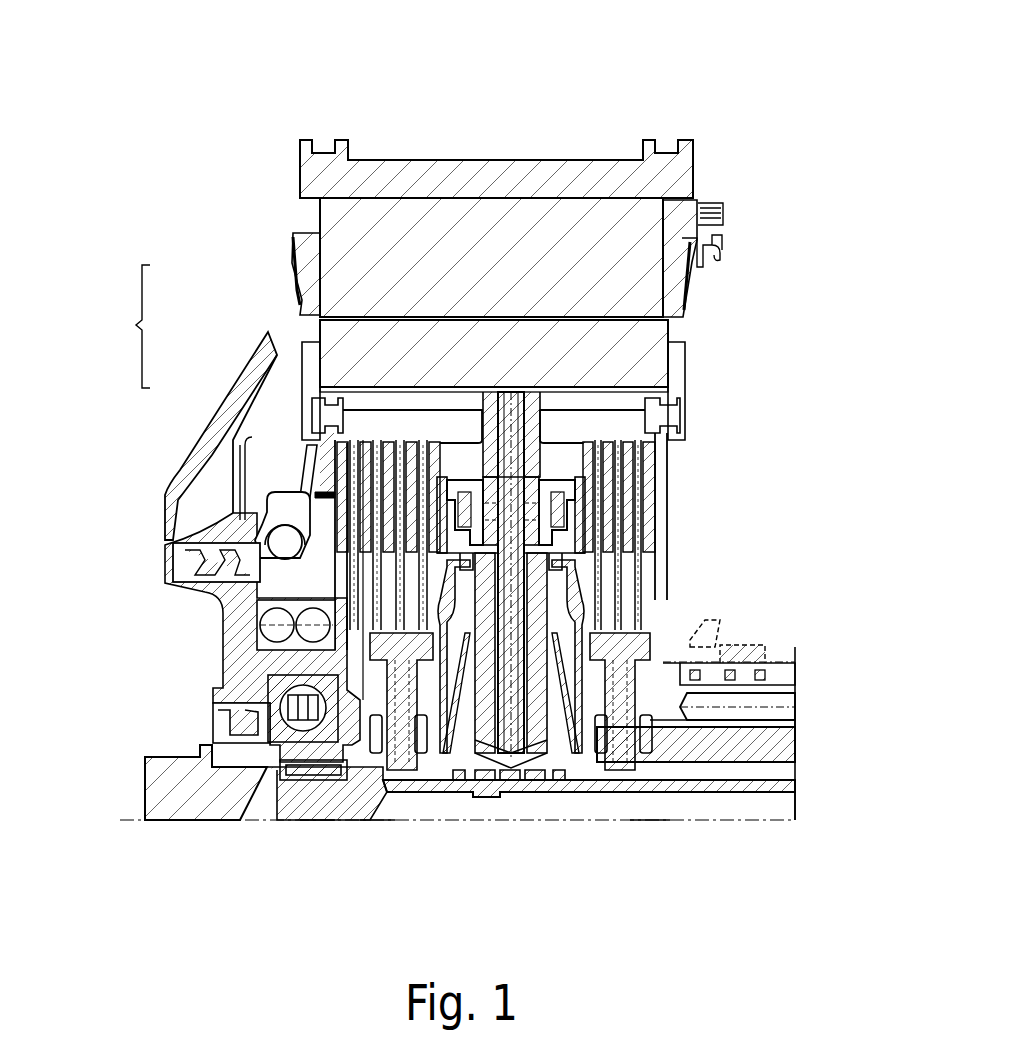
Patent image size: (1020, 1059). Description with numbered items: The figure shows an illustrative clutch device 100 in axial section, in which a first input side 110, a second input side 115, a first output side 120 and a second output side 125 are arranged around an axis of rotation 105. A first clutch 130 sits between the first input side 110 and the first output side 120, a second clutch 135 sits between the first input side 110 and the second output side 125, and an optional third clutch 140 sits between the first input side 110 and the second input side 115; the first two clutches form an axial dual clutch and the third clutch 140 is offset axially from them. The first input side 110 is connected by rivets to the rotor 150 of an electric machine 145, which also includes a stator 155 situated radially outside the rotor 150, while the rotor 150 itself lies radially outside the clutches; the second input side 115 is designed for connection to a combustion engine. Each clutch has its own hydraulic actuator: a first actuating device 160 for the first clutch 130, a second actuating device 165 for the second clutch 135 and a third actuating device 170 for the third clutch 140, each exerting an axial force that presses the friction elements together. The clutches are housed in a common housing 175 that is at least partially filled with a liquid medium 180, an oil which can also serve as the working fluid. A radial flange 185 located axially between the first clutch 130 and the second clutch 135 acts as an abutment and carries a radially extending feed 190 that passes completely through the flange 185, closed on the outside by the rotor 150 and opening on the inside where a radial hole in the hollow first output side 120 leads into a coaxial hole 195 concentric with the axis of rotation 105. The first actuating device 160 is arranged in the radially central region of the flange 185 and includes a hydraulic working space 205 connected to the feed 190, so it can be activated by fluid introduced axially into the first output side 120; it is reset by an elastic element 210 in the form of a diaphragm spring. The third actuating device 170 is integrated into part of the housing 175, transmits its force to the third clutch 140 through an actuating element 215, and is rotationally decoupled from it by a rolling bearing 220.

The clutch device 100 is at (272, 92).
The axis of rotation 105 is at (770, 830).
The first input side 110 is at (630, 405).
The second input side 115 is at (157, 790).
The first output side 120 is at (783, 780).
The second output side 125 is at (783, 745).
The first clutch 130 is at (378, 842).
The second clutch 135 is at (650, 842).
The third clutch 140 is at (318, 842).
The electric machine 145 is at (136, 325).
The rotor 150 is at (320, 357).
The stator 155 is at (337, 262).
The first actuating device 160 is at (465, 468).
The second actuating device 165 is at (565, 468).
The third actuating device 170 is at (182, 562).
The housing 175 is at (225, 450).
The liquid medium 180 is at (756, 624).
The radial flange 185 is at (547, 535).
The feed 190 is at (517, 590).
The coaxial hole 195 is at (768, 812).
The hydraulic working space 205 is at (458, 523).
The elastic element 210 is at (455, 775).
The actuating element 215 is at (298, 510).
The rolling bearing 220 is at (278, 585).